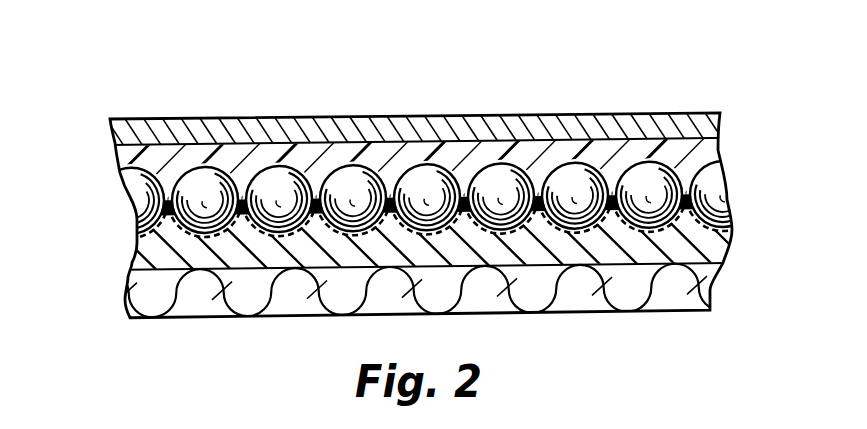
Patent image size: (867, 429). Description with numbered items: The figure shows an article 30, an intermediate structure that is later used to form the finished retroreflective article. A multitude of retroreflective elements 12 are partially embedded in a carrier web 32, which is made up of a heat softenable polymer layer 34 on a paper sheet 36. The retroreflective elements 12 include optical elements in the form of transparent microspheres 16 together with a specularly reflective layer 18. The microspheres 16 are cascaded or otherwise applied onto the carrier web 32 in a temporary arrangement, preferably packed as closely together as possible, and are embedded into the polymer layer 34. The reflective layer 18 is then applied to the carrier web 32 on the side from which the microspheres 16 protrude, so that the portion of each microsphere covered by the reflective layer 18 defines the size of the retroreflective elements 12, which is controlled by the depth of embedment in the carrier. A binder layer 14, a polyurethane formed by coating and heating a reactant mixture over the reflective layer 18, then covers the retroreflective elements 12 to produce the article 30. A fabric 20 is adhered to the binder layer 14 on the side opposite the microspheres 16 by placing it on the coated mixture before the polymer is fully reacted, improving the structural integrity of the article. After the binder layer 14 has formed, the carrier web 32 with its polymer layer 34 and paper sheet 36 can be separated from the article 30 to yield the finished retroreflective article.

The article 30 is at (663, 57).
The carrier web 32 is at (100, 122).
The paper sheet 36 is at (173, 120).
The heat softenable polymer layer 34 is at (698, 152).
The binder layer 14 is at (137, 255).
The microspheres 16 is at (348, 182).
The specularly reflective layer 18 is at (457, 228).
The retroreflective elements 12 is at (575, 157).
The fabric 20 is at (658, 303).